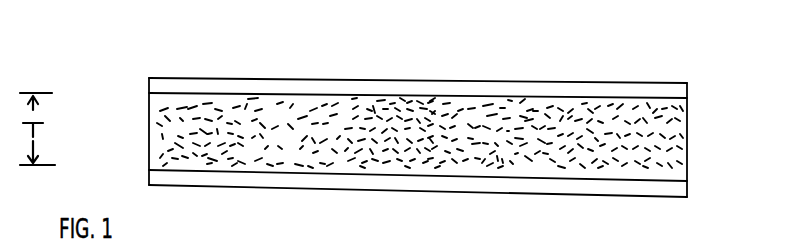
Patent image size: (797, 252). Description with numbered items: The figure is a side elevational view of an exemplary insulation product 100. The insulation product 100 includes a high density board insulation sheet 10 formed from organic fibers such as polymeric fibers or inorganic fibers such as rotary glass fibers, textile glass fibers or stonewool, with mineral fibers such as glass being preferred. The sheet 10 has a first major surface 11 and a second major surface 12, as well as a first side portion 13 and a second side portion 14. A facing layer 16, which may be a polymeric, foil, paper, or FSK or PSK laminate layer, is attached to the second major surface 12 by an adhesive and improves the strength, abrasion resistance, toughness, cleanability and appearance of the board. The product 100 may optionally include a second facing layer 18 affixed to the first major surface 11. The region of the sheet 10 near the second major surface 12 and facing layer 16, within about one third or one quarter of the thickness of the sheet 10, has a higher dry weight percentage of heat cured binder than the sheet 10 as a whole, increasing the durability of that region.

The insulation product 100 is at (752, 149).
The high density board insulation sheet 10 is at (158, 148).
The first major surface 11 is at (328, 94).
The second major surface 12 is at (300, 174).
The first side portion 13 is at (687, 115).
The second side portion 14 is at (148, 120).
The facing layer 16 is at (511, 184).
The second facing layer 18 is at (517, 86).